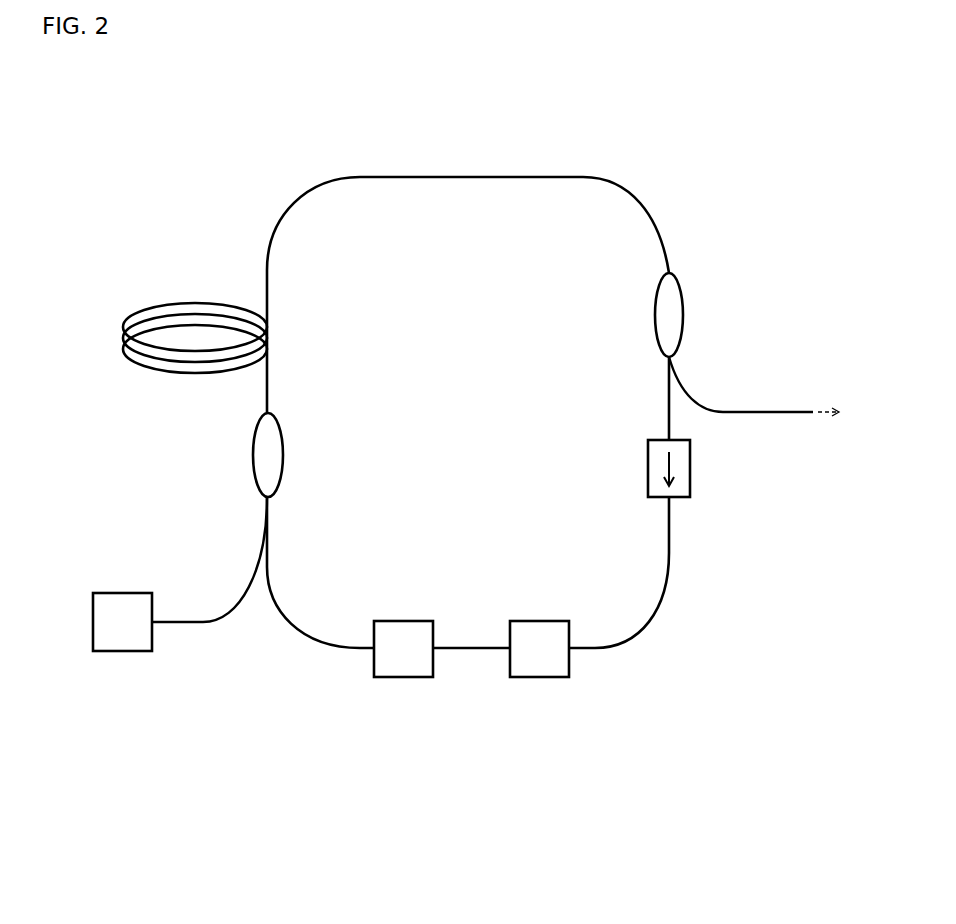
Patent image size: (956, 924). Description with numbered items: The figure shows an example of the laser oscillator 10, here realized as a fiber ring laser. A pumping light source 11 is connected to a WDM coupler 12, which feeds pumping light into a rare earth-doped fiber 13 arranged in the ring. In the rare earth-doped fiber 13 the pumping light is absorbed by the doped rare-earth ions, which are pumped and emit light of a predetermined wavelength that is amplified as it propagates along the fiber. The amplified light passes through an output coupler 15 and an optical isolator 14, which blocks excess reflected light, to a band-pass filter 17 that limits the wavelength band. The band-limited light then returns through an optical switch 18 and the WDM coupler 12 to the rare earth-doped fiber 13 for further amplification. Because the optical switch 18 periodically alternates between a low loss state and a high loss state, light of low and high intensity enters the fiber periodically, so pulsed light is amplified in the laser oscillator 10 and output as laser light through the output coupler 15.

The laser oscillator 10 is at (697, 163).
The pumping light source 11 is at (130, 637).
The WDM coupler 12 is at (260, 462).
The rare earth-doped fiber 13 is at (266, 300).
The optical isolator 14 is at (684, 483).
The output coupler 15 is at (672, 308).
The band-pass filter 17 is at (547, 657).
The optical switch 18 is at (397, 657).